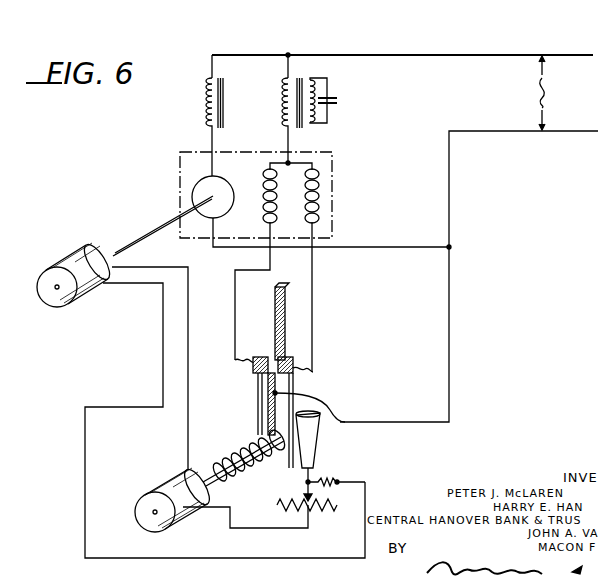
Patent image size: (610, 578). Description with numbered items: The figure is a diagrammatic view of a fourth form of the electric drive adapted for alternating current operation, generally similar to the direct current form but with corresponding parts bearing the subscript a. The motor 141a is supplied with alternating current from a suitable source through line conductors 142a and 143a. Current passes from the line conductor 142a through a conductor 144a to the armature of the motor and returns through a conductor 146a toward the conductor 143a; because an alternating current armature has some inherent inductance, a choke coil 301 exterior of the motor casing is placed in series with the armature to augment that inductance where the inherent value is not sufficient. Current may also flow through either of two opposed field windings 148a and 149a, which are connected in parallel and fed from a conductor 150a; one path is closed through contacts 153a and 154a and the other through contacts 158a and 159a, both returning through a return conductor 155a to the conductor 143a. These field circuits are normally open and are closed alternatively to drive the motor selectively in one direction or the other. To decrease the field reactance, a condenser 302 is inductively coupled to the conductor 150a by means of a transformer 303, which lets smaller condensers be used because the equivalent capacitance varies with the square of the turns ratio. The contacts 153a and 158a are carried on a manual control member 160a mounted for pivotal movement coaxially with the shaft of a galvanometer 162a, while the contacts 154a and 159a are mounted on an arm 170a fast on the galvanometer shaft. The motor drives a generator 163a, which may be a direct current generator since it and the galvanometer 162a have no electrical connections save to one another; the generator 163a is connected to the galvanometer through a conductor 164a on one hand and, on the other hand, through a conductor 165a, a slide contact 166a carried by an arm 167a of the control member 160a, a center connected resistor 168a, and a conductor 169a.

The motor 141a is at (332, 163).
The line conductor 142a is at (488, 55).
The line conductor 143a is at (449, 214).
The conductor 144a is at (210, 62).
The conductor 146a is at (303, 292).
The field winding 148a is at (265, 180).
The field winding 149a is at (318, 204).
The conductor 150a is at (290, 60).
The contact 153a is at (263, 367).
The contact 154a is at (272, 385).
The return conductor 155a is at (449, 316).
The contact 158a is at (297, 378).
The contact 159a is at (275, 359).
The manual control member 160a is at (278, 305).
The galvanometer 162a is at (139, 503).
The generator 163a is at (70, 258).
The conductor 164a is at (188, 420).
The conductor 165a is at (163, 345).
The slide contact 166a is at (306, 492).
The arm 167a is at (314, 450).
The center connected resistor 168a is at (330, 510).
The conductor 169a is at (258, 530).
The arm 170a is at (268, 415).
The choke coil 301 is at (208, 100).
The condenser 302 is at (337, 100).
The transformer 303 is at (284, 98).